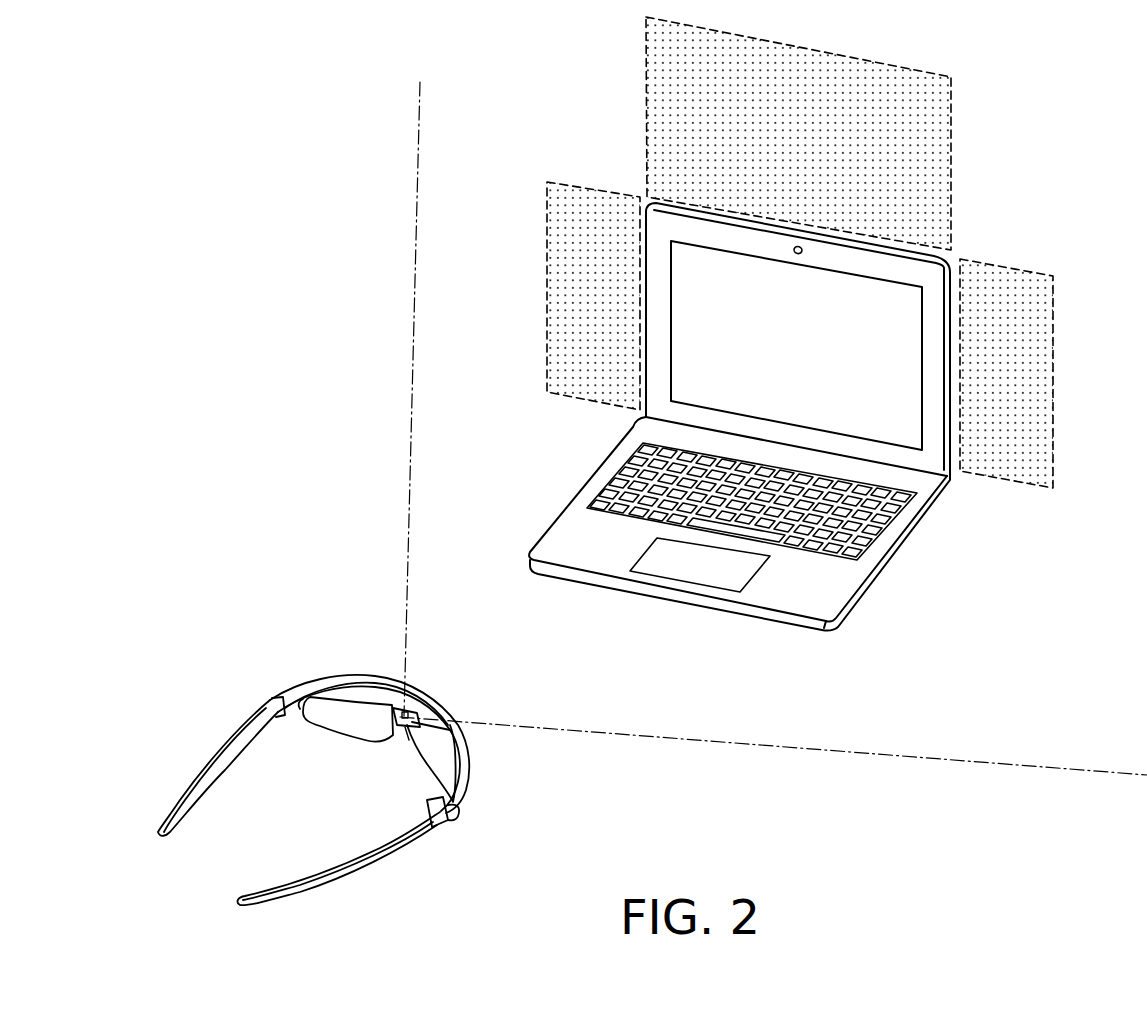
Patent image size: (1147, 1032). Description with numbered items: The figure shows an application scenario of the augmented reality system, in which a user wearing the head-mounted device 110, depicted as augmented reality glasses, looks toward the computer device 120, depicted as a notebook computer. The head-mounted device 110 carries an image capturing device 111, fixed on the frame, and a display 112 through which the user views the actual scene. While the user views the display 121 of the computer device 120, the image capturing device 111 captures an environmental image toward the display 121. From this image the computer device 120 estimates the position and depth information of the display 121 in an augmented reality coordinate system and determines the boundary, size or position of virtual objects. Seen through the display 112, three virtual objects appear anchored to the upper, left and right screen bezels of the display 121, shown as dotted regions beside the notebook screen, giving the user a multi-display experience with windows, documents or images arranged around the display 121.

The head-mounted device 110 is at (313, 758).
The image capturing device 111 is at (400, 735).
The display 112 is at (345, 700).
The computer device 120 is at (825, 417).
The display 121 is at (923, 343).